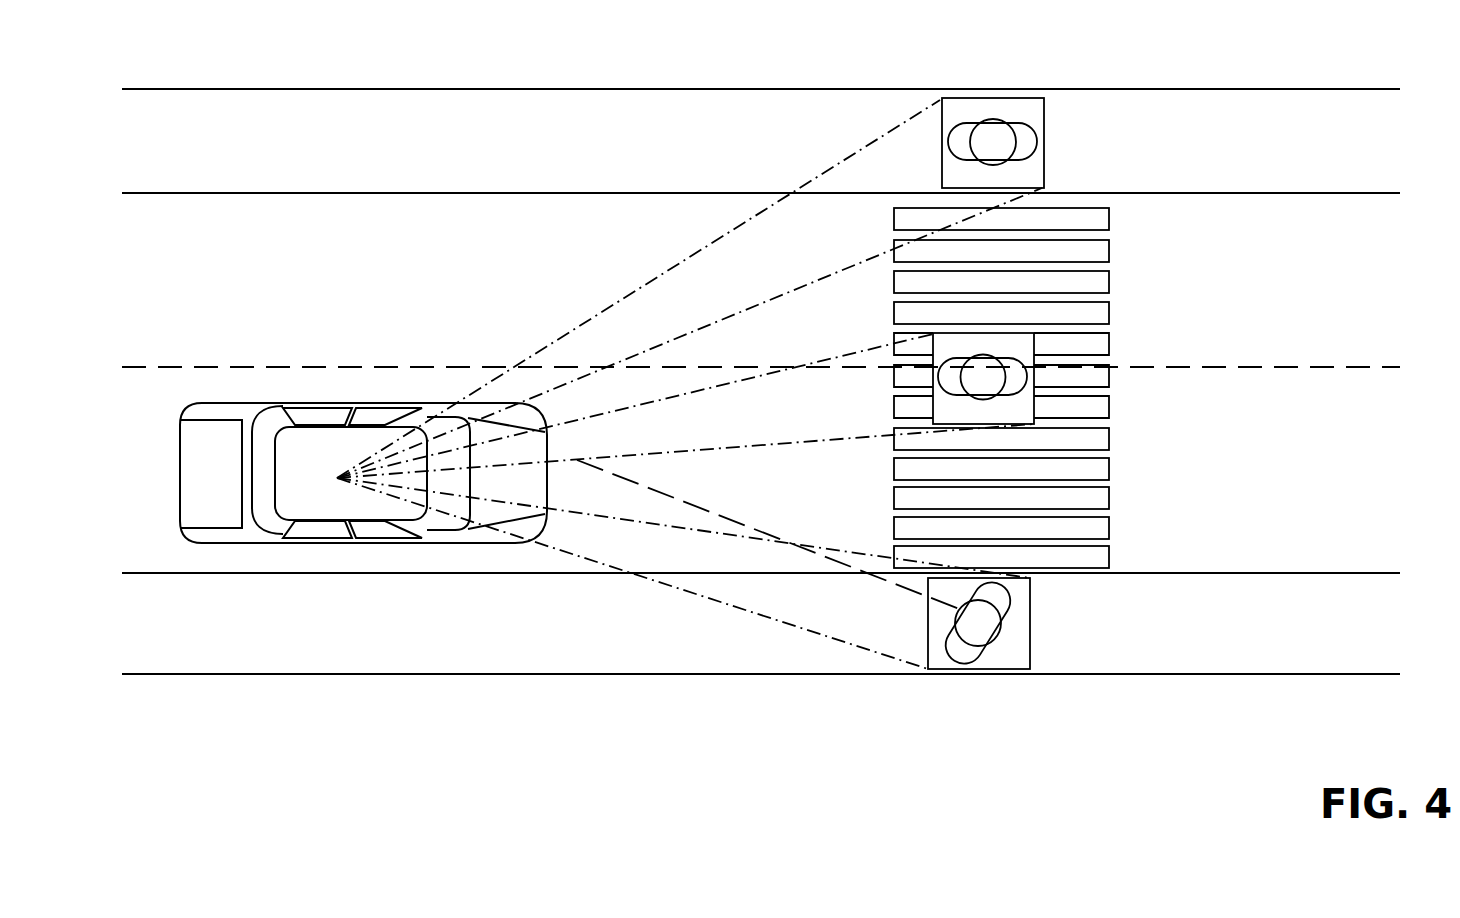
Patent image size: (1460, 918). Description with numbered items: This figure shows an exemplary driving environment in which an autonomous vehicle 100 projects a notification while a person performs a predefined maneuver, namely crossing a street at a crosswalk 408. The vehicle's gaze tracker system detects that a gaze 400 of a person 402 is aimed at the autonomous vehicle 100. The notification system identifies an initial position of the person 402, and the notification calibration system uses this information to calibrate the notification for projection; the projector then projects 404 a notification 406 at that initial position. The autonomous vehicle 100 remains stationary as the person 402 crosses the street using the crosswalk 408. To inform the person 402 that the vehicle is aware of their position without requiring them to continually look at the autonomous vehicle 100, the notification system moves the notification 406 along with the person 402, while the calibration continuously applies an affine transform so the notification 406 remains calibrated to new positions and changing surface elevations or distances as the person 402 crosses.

The autonomous vehicle 100 is at (163, 498).
The gaze 400 is at (750, 528).
The person 402 is at (993, 114).
The projection 404 is at (640, 274).
The notification 406 is at (1044, 163).
The crosswalk 408 is at (1140, 270).